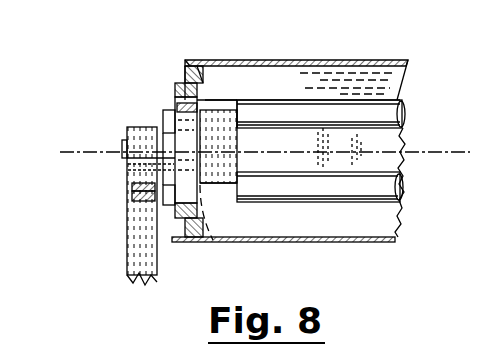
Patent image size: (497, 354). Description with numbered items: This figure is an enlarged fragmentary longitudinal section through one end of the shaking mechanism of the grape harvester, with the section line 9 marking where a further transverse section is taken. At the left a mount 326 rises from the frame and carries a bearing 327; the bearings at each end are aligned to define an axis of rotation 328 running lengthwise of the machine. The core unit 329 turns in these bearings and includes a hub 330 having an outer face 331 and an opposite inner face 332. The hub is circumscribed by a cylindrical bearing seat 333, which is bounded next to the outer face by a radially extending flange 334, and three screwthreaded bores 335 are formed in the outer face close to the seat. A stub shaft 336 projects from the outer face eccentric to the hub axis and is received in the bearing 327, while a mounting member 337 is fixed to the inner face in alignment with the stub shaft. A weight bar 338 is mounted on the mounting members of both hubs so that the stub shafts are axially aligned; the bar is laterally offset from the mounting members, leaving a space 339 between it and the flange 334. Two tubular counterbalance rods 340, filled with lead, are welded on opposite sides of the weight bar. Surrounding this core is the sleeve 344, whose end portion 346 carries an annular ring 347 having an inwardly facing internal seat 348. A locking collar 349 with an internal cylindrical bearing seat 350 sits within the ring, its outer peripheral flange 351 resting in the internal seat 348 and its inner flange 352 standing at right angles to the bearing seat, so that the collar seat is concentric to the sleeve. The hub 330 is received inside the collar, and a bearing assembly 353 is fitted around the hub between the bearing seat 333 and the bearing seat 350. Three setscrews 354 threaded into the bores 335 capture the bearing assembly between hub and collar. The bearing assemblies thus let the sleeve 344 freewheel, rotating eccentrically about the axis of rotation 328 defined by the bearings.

The section line 9— 9 is at (98, 90).
The mount 326 is at (140, 258).
The bearing 327 is at (138, 160).
The axis of rotation 328 is at (78, 150).
The core unit 329 is at (330, 216).
The hub 330 is at (165, 163).
The outer face 331 is at (163, 170).
The inner face 332 is at (240, 107).
The cylindrical bearing seat 333 is at (178, 108).
The radially extending flange 334 is at (220, 142).
The screwthreaded bore 335 is at (205, 232).
The stub shaft 336 is at (123, 143).
The mounting member 337 is at (230, 212).
The weight bar 338 is at (405, 168).
The space 339 is at (236, 128).
The tubular counterbalance rod 340 is at (378, 121).
The sleeve 344 is at (366, 58).
The end portion 346 is at (186, 62).
The annular ring 347 is at (187, 60).
The internal seat 348 is at (215, 66).
The locking collar 349 is at (205, 84).
The internal cylindrical bearing seat 350 is at (182, 98).
The outer peripheral flange 351 is at (196, 62).
The inner flange 352 is at (203, 98).
The bearing assembly 353 is at (167, 205).
The setscrew 354 is at (163, 115).